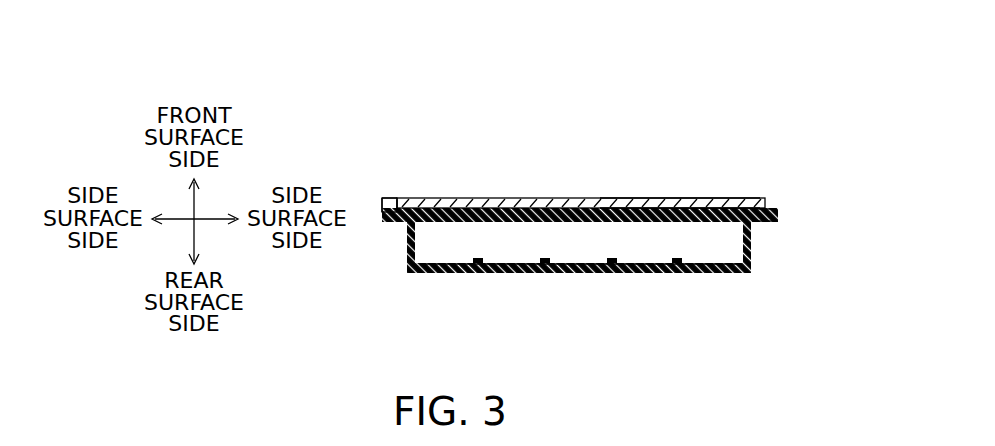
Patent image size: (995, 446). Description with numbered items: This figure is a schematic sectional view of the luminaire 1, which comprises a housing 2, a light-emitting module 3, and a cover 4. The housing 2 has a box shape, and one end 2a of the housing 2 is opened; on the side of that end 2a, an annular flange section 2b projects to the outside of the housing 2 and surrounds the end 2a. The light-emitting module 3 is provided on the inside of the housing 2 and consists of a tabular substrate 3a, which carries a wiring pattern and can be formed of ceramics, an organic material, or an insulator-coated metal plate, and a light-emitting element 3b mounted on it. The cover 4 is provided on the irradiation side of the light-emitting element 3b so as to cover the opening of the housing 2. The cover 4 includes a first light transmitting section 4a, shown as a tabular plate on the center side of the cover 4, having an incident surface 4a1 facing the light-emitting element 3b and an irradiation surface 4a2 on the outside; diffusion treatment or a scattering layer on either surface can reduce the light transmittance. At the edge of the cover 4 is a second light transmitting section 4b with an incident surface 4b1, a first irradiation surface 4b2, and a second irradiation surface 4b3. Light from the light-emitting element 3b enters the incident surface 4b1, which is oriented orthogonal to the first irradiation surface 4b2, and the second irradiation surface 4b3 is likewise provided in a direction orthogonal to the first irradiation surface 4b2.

The luminaire 1 is at (774, 101).
The housing 2 is at (749, 279).
The end of the housing 2a is at (774, 204).
The flange section 2b is at (763, 223).
The light-emitting module 3 is at (550, 355).
The substrate 3a is at (577, 268).
The light-emitting element 3b is at (608, 262).
The cover 4 is at (403, 90).
The first light transmitting section 4a is at (493, 200).
The incident surface 4a1 is at (704, 213).
The irradiation surface 4a2 is at (672, 196).
The second light transmitting section 4b is at (396, 206).
The incident surface 4b1 is at (417, 215).
The first irradiation surface 4b2 is at (387, 196).
The second irradiation surface 4b3 is at (369, 199).